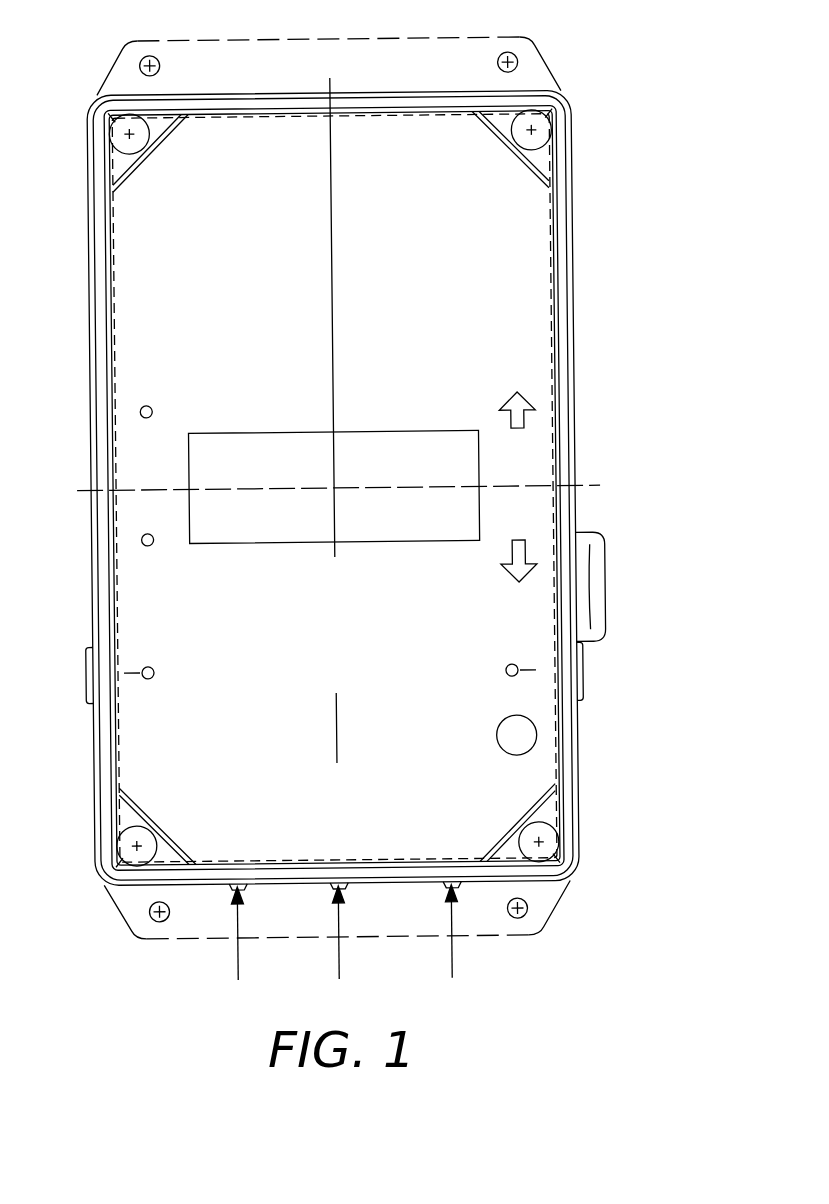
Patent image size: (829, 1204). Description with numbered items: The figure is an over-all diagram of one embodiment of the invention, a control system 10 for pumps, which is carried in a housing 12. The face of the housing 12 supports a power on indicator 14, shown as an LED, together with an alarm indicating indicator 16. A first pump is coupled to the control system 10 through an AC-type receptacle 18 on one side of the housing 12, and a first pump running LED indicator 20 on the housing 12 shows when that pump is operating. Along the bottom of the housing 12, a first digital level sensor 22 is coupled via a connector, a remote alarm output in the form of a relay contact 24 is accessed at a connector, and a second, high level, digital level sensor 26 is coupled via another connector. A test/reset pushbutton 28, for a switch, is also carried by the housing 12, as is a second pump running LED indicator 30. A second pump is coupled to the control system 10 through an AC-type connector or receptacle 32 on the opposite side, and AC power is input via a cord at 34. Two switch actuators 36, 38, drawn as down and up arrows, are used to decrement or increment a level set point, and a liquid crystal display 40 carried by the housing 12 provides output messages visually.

The control system 10 is at (632, 60).
The housing 12 is at (537, 70).
The power on indicator 14 is at (141, 410).
The alarm indicating indicator 16 is at (140, 538).
The AC-type receptacle 18 is at (86, 661).
The pump 1 running LED indicator 20 is at (178, 677).
The first digital level sensor 22 is at (232, 963).
The relay contact 24 is at (333, 963).
The second, high level, digital level sensor 26 is at (446, 963).
The test/reset pushbutton 28 is at (534, 735).
The pump 2 running LED indicator 30 is at (473, 680).
The AC-type connector or receptacle 32 is at (581, 664).
The AC power input 34 is at (604, 575).
The switch actuator 36 is at (499, 572).
The switch actuator 38 is at (510, 393).
The liquid crystal display 40 is at (431, 431).